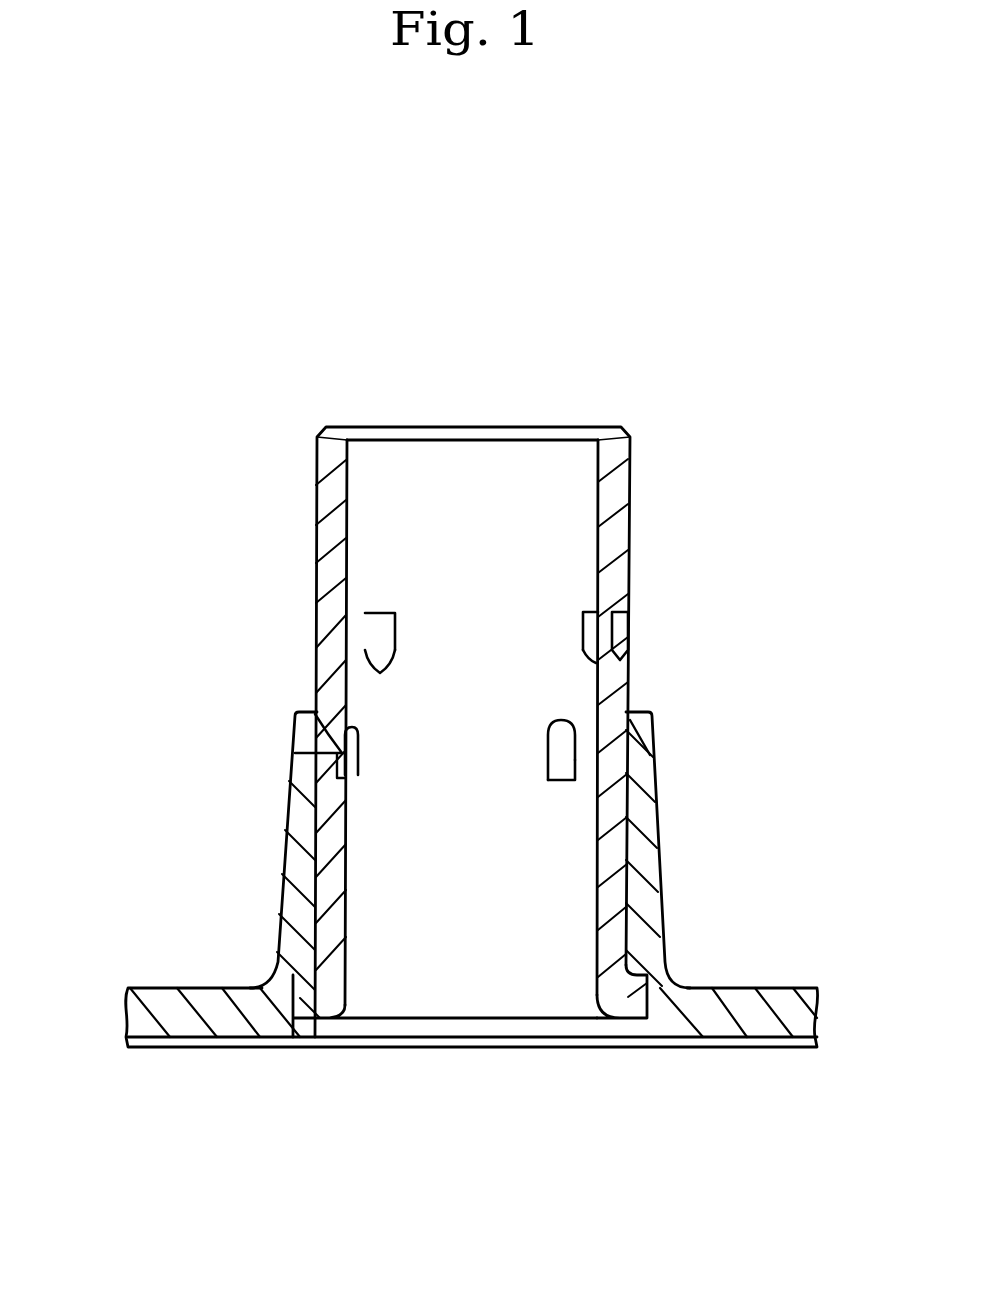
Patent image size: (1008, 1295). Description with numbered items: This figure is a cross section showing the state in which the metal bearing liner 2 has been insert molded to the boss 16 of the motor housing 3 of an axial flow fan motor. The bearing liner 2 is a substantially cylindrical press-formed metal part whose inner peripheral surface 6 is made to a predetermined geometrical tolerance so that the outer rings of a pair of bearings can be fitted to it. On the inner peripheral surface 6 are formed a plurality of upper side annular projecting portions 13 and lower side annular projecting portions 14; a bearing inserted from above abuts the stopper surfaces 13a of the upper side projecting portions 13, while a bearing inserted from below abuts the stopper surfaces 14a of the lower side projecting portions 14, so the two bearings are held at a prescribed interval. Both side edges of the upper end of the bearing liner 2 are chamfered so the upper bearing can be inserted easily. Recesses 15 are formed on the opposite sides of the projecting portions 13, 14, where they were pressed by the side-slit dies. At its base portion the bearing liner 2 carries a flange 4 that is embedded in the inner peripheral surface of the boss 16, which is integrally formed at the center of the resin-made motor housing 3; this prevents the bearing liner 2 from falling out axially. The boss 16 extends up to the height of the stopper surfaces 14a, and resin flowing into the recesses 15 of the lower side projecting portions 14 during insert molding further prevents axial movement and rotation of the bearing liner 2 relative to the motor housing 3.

The metal bearing liner 2 is at (646, 498).
The motor housing 3 is at (775, 970).
The flange 4 is at (313, 988).
The inner peripheral surface 6 is at (598, 908).
The upper side annular projecting portions 13 is at (582, 622).
The stopper surfaces 13a is at (380, 622).
The lower side annular projecting portions 14 is at (565, 757).
The stopper surfaces 14a is at (549, 782).
The recesses 15 is at (627, 629).
The boss 16 is at (298, 905).